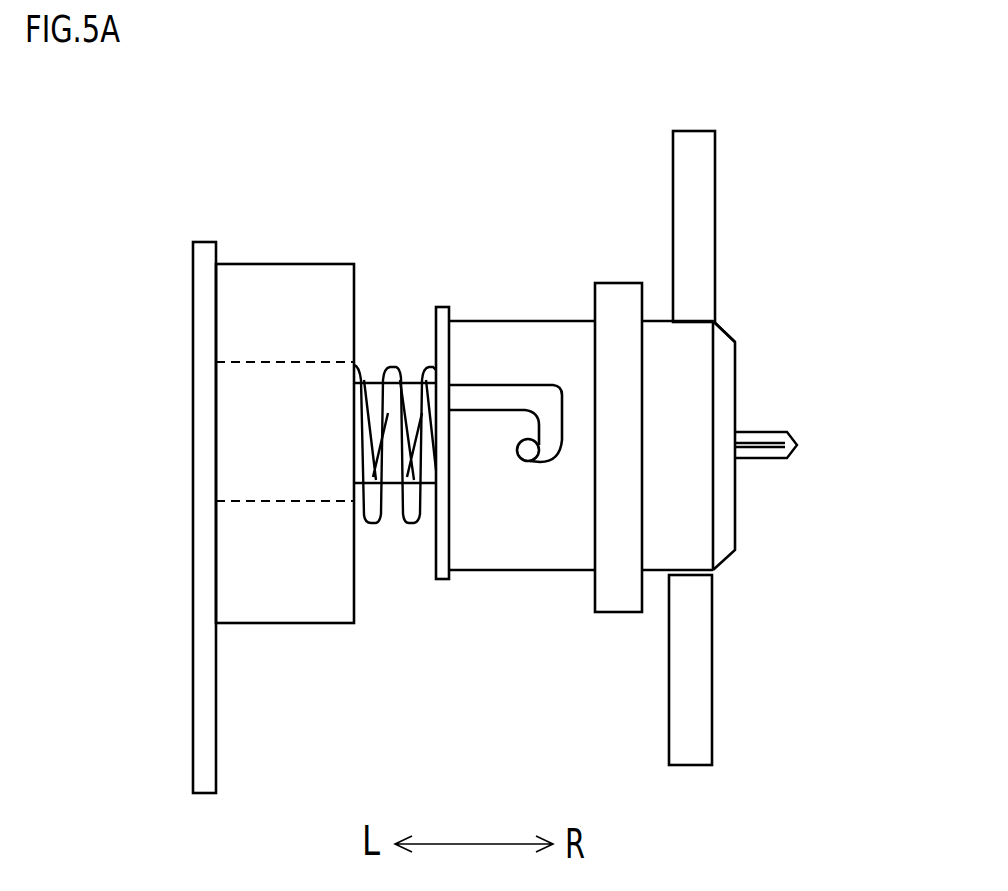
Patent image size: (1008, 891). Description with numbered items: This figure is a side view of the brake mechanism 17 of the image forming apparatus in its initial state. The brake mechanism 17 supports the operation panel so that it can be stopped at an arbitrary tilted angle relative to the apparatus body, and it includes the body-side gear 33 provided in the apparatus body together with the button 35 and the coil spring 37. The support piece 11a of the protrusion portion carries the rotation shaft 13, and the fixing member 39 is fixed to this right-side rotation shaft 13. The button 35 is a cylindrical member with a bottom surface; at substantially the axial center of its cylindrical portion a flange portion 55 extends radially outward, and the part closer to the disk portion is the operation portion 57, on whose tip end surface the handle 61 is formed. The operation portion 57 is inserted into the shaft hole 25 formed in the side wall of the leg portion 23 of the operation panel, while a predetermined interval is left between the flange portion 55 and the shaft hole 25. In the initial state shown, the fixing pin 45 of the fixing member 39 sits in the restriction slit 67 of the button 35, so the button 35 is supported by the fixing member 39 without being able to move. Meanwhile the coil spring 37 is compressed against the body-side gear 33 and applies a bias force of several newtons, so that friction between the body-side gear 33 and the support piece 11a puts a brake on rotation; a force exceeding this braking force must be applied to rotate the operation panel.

The support piece 11a is at (203, 333).
The rotation shaft 13 is at (245, 441).
The brake mechanism 17 is at (453, 212).
The leg portion 23 is at (702, 243).
The shaft hole 25 is at (713, 325).
The body-side gear 33 is at (268, 262).
The button 35 is at (556, 574).
The coil spring 37 is at (410, 526).
The fixing member 39 is at (388, 488).
The fixing pin 45 is at (524, 440).
The flange portion 55 is at (612, 296).
The operation portion 57 is at (658, 368).
The handle 61 is at (797, 444).
The restriction slit 67 is at (550, 438).